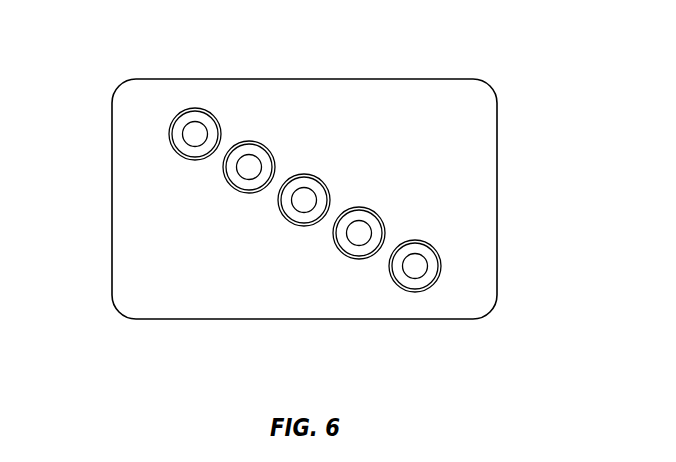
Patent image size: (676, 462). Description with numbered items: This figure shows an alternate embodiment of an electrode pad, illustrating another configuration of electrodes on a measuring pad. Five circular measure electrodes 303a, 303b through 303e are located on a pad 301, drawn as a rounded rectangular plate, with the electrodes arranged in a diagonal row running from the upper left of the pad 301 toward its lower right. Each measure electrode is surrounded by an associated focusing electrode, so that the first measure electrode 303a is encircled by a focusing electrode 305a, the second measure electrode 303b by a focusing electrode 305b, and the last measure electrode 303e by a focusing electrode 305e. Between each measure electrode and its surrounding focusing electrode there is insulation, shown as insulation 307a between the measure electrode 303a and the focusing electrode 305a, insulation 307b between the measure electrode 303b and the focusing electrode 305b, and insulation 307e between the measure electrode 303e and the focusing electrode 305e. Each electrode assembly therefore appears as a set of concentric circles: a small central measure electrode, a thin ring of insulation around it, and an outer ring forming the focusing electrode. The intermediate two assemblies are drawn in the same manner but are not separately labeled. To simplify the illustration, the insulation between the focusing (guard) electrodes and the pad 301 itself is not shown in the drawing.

The pad 301 is at (407, 100).
The measure electrode 303a is at (195, 134).
The focusing electrode 305a is at (169, 135).
The insulation 307a is at (195, 140).
The measure electrode 303b is at (249, 167).
The focusing electrode 305b is at (276, 167).
The insulation 307b is at (249, 172).
The measure electrode 303e is at (415, 266).
The focusing electrode 305e is at (441, 266).
The insulation 307e is at (415, 270).